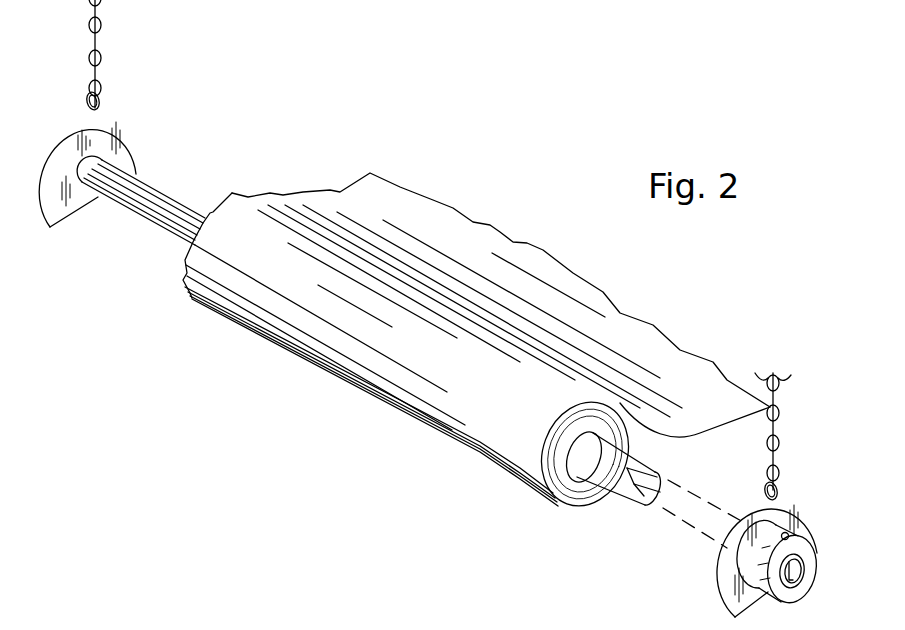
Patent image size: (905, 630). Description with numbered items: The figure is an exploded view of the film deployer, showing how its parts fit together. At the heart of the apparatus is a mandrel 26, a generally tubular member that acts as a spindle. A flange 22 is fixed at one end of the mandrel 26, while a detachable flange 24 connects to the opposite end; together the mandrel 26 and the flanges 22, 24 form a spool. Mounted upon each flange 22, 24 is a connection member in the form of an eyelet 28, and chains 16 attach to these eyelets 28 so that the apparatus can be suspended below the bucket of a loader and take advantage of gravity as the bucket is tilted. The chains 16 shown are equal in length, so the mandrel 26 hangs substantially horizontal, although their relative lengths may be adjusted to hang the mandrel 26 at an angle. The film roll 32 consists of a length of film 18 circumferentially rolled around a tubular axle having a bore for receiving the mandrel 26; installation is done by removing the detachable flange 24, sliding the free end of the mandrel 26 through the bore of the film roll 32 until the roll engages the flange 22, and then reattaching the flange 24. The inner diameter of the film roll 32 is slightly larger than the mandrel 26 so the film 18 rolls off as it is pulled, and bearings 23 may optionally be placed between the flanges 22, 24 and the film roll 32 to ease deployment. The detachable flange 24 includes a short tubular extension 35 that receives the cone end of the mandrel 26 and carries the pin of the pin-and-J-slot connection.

The chains 16 is at (107, 60).
The film 18 is at (660, 350).
The flange 22 is at (138, 148).
The bearings 23 is at (596, 494).
The detachable flange 24 is at (814, 517).
The mandrel 26 is at (179, 203).
The eyelet 28 is at (101, 100).
The film roll 32 is at (333, 412).
The tubular extension 35 is at (803, 596).